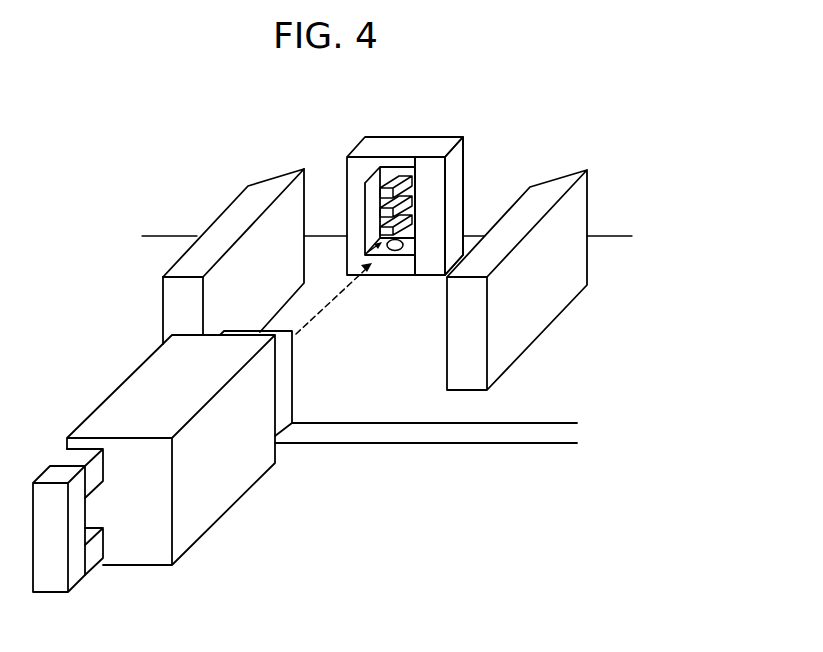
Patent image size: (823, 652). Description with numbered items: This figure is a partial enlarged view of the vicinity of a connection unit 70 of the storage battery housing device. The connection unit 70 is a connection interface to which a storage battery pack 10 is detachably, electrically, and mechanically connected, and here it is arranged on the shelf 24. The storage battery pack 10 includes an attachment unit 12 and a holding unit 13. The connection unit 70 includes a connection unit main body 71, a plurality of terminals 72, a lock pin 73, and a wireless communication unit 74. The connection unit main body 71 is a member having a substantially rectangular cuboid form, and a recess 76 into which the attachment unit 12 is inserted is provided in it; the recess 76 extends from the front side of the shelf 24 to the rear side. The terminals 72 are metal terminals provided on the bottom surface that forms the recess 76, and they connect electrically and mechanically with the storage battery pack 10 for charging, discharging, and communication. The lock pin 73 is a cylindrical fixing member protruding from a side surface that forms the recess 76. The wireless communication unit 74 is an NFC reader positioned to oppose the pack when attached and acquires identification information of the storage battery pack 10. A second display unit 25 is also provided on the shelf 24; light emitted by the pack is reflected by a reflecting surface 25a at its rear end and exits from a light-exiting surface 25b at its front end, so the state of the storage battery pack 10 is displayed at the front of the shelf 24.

The storage battery pack 10 is at (145, 375).
The attachment unit 12 is at (285, 400).
The holding unit 13 is at (77, 557).
The shelf 24 is at (443, 433).
The second display unit 25 is at (188, 234).
The reflecting surface 25a is at (270, 178).
The light-exiting surface 25b is at (175, 287).
The connection unit 70 is at (406, 195).
The connection unit main body 71 is at (455, 160).
The terminals 72 is at (378, 231).
The lock pin 73 is at (393, 251).
The wireless communication unit 74 is at (430, 205).
The recess 76 is at (363, 252).